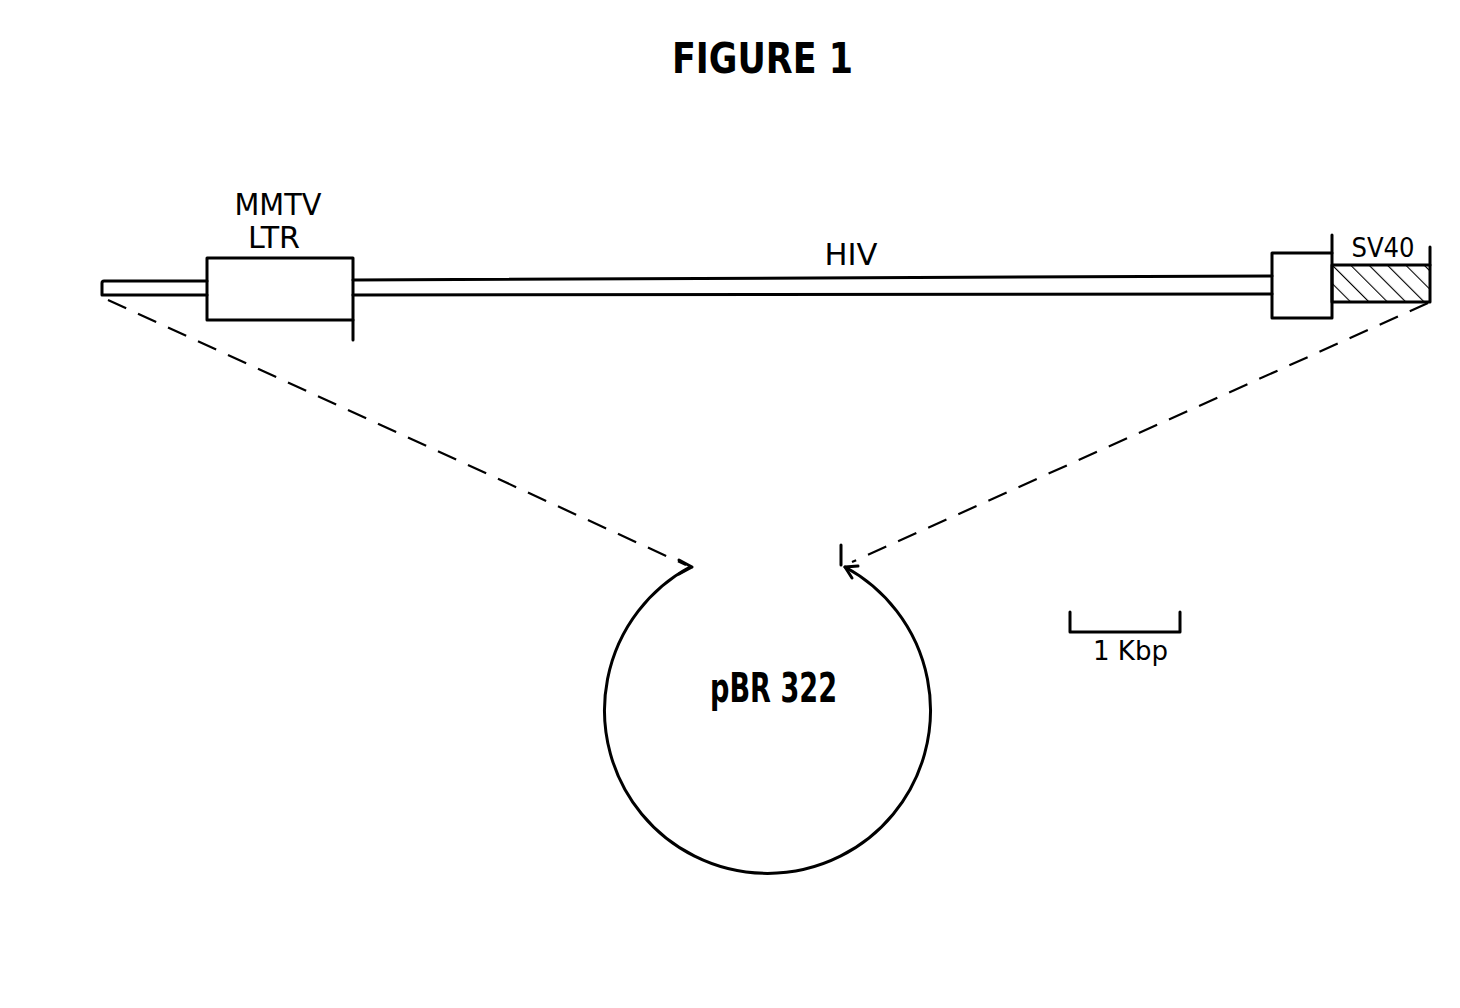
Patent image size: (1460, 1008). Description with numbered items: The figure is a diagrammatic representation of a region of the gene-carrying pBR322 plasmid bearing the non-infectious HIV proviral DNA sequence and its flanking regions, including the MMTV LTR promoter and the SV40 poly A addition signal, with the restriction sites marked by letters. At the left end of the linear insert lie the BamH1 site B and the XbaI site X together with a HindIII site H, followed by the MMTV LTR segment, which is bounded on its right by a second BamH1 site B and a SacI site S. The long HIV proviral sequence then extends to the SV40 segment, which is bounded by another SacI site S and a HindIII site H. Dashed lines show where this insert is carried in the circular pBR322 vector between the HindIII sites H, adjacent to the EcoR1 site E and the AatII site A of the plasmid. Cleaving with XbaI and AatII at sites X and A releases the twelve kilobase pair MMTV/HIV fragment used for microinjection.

The BamH1 restriction site B is at (229, 309).
The XbaI restriction site X is at (102, 295).
The HindIII restriction site H is at (103, 295).
The SacI restriction site S is at (353, 295).
The EcoR1 restriction site E is at (868, 577).
The AatII restriction site A is at (878, 588).